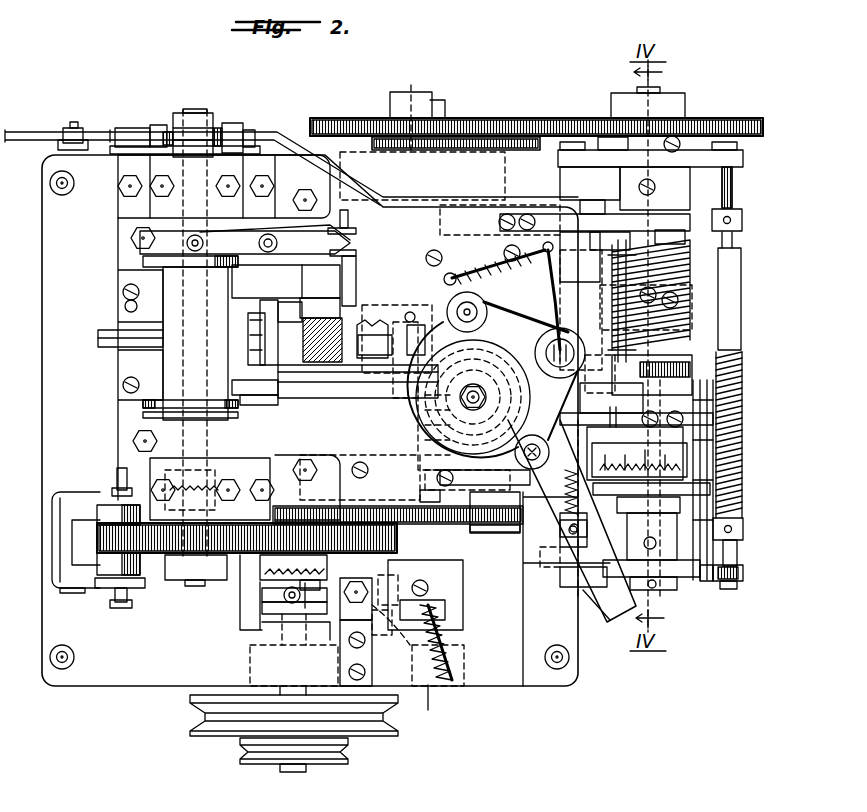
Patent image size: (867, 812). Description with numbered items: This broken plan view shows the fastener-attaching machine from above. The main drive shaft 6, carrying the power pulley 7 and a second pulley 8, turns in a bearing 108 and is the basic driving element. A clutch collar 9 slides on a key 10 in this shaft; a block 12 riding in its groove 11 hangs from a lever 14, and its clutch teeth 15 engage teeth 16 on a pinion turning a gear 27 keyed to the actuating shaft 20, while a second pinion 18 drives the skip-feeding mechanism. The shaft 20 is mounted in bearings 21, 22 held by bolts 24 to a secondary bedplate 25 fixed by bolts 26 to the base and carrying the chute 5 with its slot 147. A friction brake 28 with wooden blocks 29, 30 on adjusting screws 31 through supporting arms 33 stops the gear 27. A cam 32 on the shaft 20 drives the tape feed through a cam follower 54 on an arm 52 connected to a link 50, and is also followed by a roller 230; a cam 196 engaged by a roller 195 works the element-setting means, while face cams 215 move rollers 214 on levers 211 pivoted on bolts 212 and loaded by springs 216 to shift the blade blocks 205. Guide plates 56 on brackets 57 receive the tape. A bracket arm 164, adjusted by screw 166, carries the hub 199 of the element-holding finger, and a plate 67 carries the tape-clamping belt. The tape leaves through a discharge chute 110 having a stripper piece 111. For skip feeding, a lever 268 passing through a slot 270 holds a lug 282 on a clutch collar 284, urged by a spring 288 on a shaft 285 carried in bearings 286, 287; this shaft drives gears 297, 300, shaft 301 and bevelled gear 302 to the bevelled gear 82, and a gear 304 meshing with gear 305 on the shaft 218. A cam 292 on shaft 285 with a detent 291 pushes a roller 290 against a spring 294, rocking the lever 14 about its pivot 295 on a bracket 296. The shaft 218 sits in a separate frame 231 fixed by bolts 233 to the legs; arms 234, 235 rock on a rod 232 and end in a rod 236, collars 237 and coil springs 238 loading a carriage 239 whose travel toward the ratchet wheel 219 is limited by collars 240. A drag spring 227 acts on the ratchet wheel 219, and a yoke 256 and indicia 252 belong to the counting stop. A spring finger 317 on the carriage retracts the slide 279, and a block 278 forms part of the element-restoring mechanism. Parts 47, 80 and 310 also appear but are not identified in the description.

The link 50 is at (42, 133).
The arm 52 is at (110, 140).
The cam follower 54 is at (156, 130).
The actuating shaft 20 is at (196, 113).
The cam 32 is at (222, 130).
The roller 230 is at (252, 135).
The bearing 21 is at (150, 203).
The bolts 24 is at (128, 176).
The springs 216 is at (272, 215).
The secondary bedplate 25 is at (120, 235).
The bolts 26 is at (132, 243).
The rollers 214 is at (188, 243).
The bolts 212 is at (259, 243).
The levers 211 is at (340, 232).
The face cams 215 is at (195, 262).
The blocks 205 is at (360, 260).
The brackets 57 is at (137, 299).
The guide plates 56 is at (100, 336).
The cam 196 is at (150, 402).
The bearing 108 is at (252, 368).
The slot 147 is at (304, 341).
The chute 5 is at (314, 320).
The hub 199 is at (378, 330).
The adjusting screw 166 is at (250, 375).
The roller 195 is at (243, 398).
The bracket arm 164 is at (330, 380).
The spring 288 is at (410, 385).
The bearing 22 is at (140, 440).
The second pinion 18 is at (276, 490).
The adjusting screws 31 is at (118, 475).
The block 278 is at (400, 470).
The lug 282 is at (400, 508).
The gear 27 is at (100, 538).
The block 30 is at (108, 503).
The block 29 is at (110, 580).
The friction brake 28 is at (52, 518).
The supporting arms 33 is at (105, 590).
The teeth 16 is at (260, 572).
The clutch teeth 15 is at (265, 578).
The groove 11 is at (262, 596).
The block 12 is at (262, 608).
The clutch collar 9 is at (262, 622).
The key 10 is at (302, 625).
The lever 14 is at (328, 610).
The block 47 is at (350, 605).
The detent 291 is at (420, 608).
The pivot 295 is at (320, 620).
The bracket 296 is at (357, 640).
The cam 292 is at (400, 620).
The roller 290 is at (430, 582).
The spring 294 is at (446, 632).
The bearing 286 is at (465, 665).
The shaft 285 is at (432, 712).
The pulley 7 is at (195, 705).
The second pulley 8 is at (240, 748).
The main drive shaft 6 is at (290, 772).
The gear 300 is at (512, 118).
The gear 304 is at (370, 118).
The gear 305 is at (740, 118).
The bearing 287 is at (398, 165).
The gear 297 is at (440, 118).
The rod 232 is at (570, 142).
The shaft 218 is at (664, 92).
The arm 234 is at (743, 157).
The ratchet wheel 219 is at (690, 230).
The collars 240 is at (742, 224).
The carriage 239 is at (741, 280).
The second spring 227 is at (606, 232).
The plate 67 is at (572, 265).
The shaft 301 is at (484, 285).
The bevelled gear 302 is at (480, 312).
The bevelled gear 82 is at (538, 345).
The gear 80 is at (478, 398).
The stripper piece 111 is at (500, 452).
The slide 279 is at (549, 450).
The clutch collar 284 is at (450, 478).
The yoke 256 is at (622, 362).
The spring finger 317 is at (640, 412).
The rod 310 is at (740, 396).
The indicia 252 is at (700, 452).
The coil springs 238 is at (742, 492).
The collars 237 is at (742, 524).
The second rod 236 is at (736, 552).
The arm 235 is at (746, 574).
The discharge chute 110 is at (610, 620).
The bolts 233 is at (545, 565).
The frame 231 is at (528, 585).
The lever 268 is at (488, 525).
The slot 270 is at (502, 524).